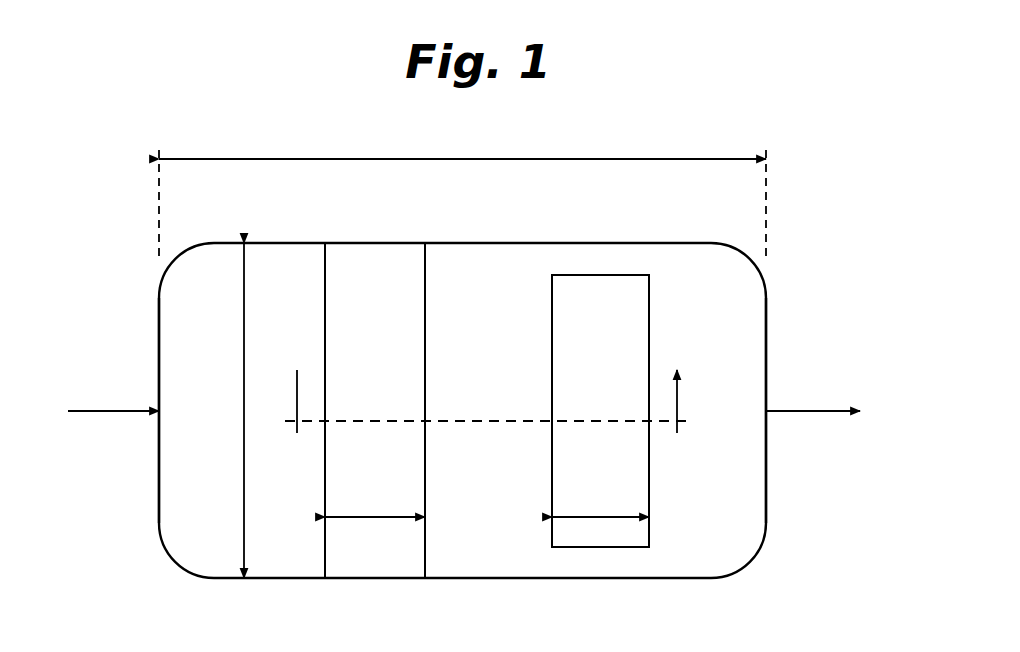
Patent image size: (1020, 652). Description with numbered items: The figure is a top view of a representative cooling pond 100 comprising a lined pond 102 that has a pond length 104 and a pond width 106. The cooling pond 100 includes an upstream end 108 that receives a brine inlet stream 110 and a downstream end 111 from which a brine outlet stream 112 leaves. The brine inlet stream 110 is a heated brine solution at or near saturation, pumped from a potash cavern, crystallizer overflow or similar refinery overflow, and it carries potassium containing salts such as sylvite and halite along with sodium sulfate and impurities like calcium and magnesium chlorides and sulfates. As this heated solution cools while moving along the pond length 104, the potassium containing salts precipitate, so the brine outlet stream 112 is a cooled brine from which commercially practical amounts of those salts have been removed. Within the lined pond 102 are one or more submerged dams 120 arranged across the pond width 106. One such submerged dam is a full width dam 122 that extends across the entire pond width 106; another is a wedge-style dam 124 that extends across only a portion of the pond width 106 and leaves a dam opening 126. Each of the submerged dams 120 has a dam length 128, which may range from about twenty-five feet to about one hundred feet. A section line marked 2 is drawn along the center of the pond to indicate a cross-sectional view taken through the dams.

The cooling pond 100 is at (630, 108).
The lined pond 102 is at (706, 578).
The pond length 104 is at (318, 158).
The pond width 106 is at (244, 525).
The upstream end 108 is at (159, 470).
The brine inlet stream 110 is at (89, 413).
The downstream end 111 is at (766, 482).
The brine outlet stream 112 is at (834, 412).
The submerged dams 120 is at (552, 295).
The full width dam 122 is at (367, 272).
The wedge-style dam 124 is at (611, 293).
The dam opening 126 is at (585, 257).
The dam length 128 is at (592, 517).
The section line 2- 2 is at (486, 388).